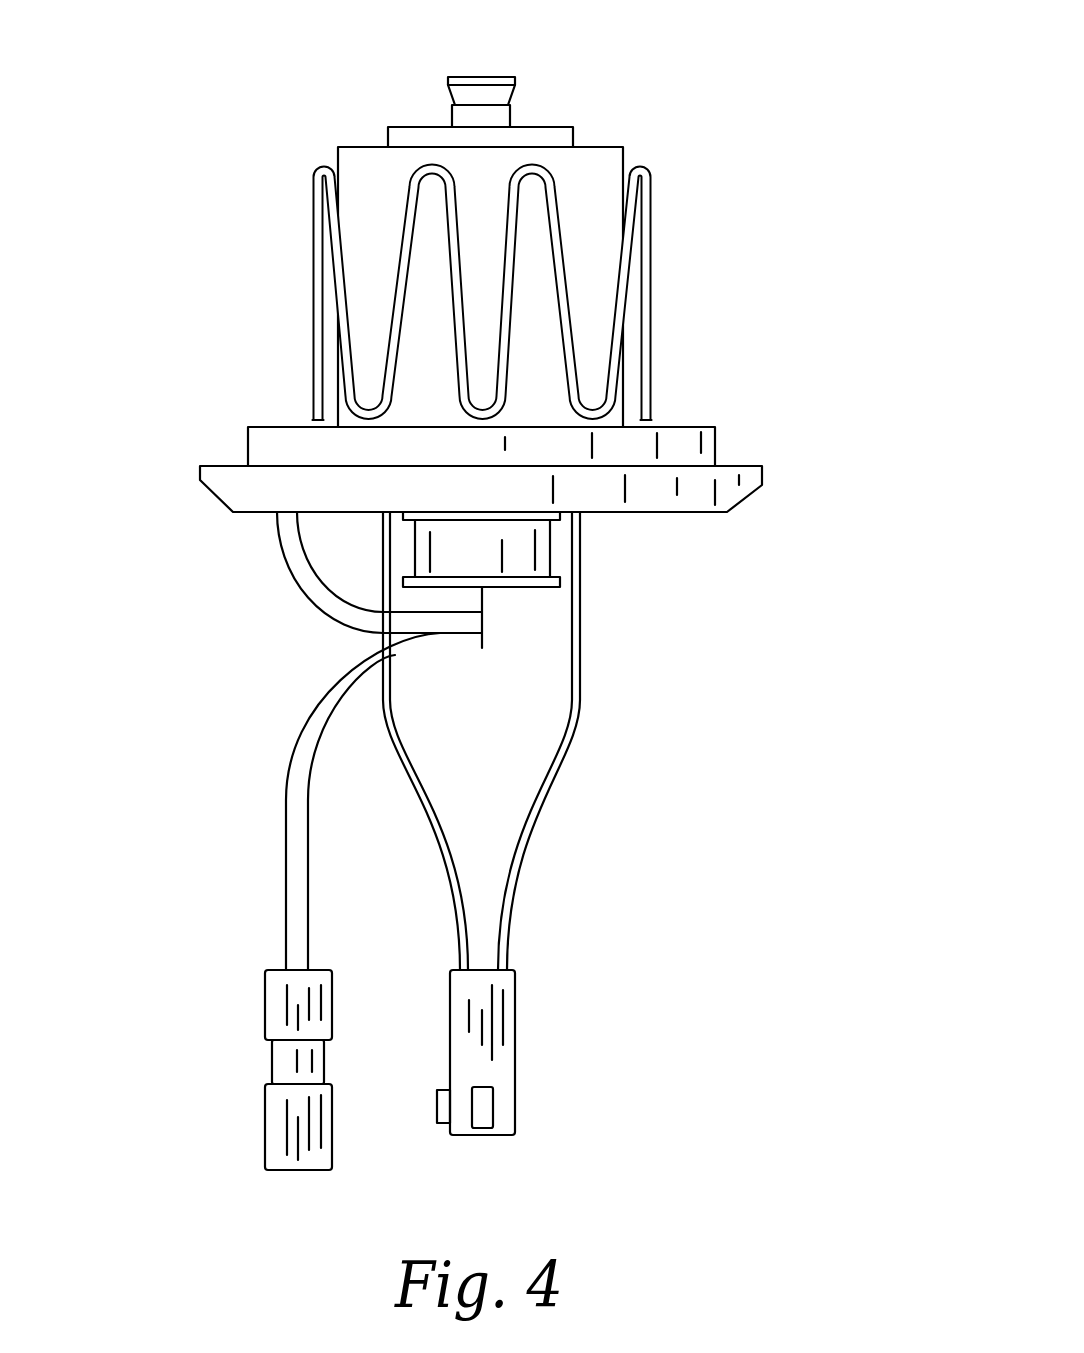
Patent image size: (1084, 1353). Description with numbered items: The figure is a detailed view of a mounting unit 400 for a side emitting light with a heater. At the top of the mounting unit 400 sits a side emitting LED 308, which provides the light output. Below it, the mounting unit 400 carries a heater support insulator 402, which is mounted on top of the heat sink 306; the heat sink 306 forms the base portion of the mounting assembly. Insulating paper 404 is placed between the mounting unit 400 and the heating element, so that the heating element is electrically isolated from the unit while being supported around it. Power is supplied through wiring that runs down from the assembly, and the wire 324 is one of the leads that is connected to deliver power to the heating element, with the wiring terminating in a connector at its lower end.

The mounting unit 400 is at (738, 273).
The side emitting LED 308 is at (465, 80).
The insulating paper 404 is at (590, 202).
The heater support insulator 402 is at (282, 438).
The heat sink 306 is at (662, 485).
The wire 324 is at (283, 1121).